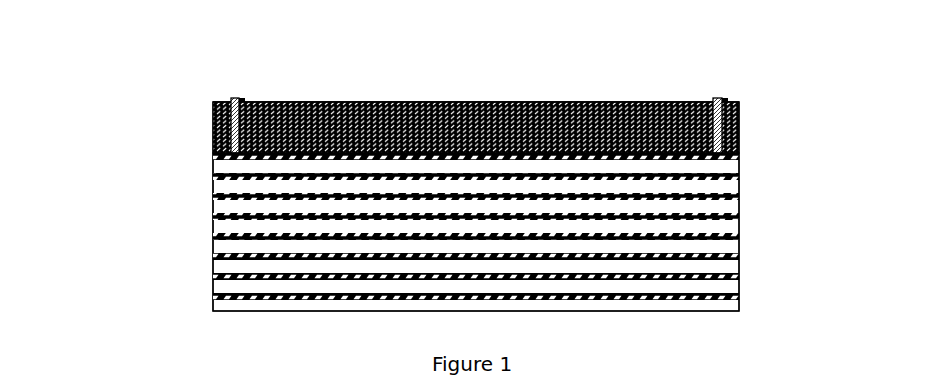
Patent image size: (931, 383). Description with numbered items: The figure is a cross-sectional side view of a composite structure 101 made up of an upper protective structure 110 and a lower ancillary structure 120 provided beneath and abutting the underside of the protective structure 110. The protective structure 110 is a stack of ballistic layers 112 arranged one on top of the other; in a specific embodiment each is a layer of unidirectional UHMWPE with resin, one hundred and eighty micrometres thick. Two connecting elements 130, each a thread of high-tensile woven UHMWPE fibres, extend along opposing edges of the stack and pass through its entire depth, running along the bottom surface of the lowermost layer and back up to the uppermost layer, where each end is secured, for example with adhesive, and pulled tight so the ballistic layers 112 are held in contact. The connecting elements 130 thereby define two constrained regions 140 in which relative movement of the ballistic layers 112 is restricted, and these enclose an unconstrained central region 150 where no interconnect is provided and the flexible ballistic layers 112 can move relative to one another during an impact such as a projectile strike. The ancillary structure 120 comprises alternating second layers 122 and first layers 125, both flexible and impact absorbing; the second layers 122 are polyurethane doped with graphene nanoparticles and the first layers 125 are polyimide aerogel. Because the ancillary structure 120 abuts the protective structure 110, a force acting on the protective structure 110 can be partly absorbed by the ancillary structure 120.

The composite structure 101 is at (140, 72).
The protective structure 110 is at (208, 102).
The ballistic layers 112 is at (740, 104).
The ancillary structure 120 is at (208, 158).
The second layers 122 is at (740, 157).
The first layers 125 is at (730, 224).
The connecting elements 130 is at (239, 100).
The constrained regions 140 is at (250, 98).
The unconstrained central region 150 is at (478, 100).